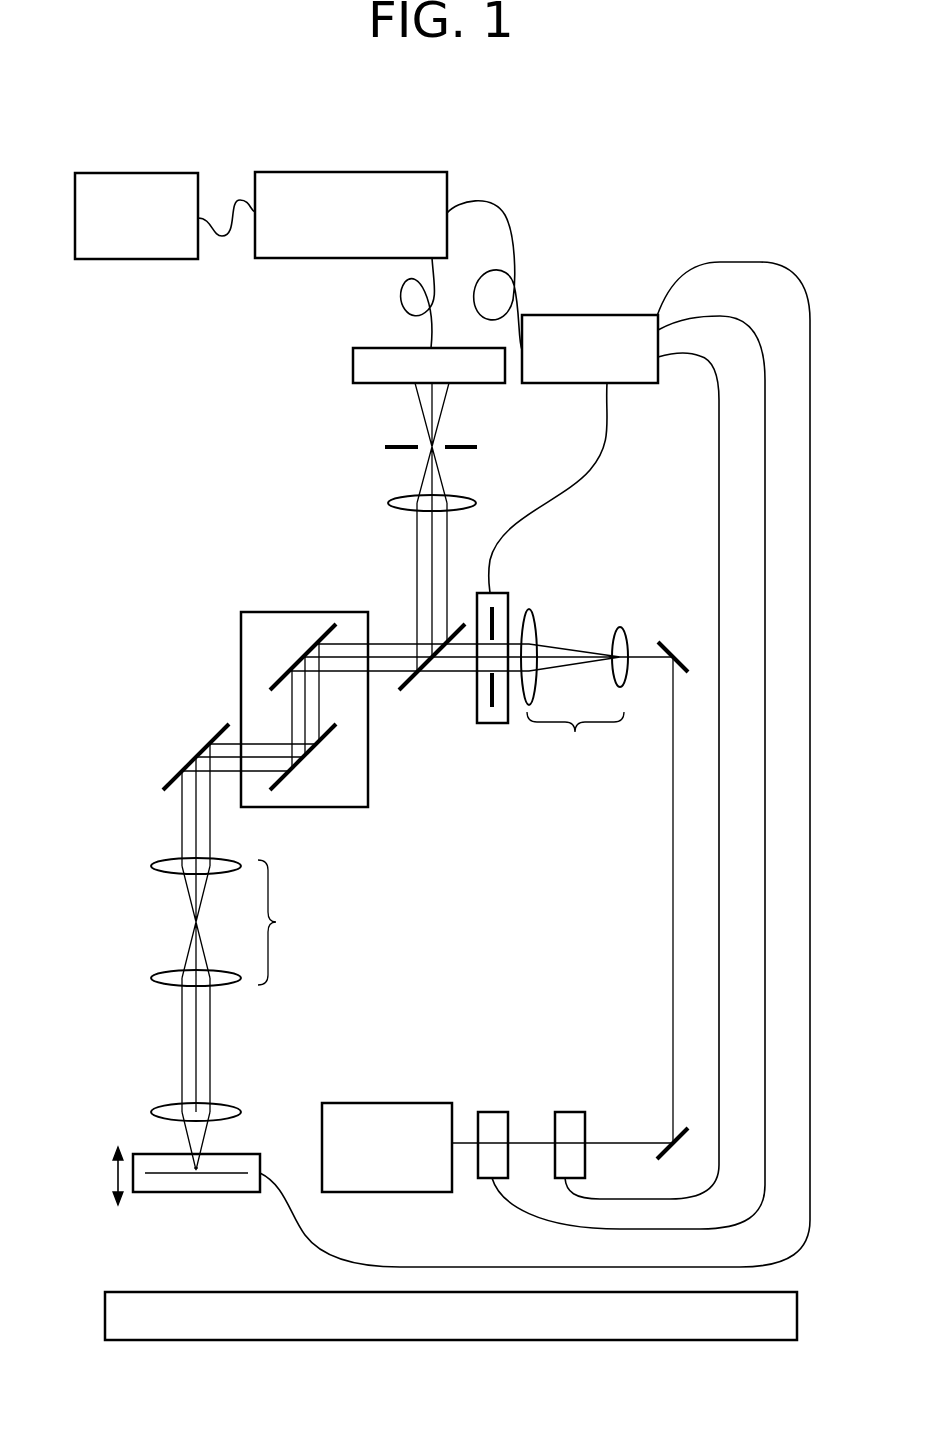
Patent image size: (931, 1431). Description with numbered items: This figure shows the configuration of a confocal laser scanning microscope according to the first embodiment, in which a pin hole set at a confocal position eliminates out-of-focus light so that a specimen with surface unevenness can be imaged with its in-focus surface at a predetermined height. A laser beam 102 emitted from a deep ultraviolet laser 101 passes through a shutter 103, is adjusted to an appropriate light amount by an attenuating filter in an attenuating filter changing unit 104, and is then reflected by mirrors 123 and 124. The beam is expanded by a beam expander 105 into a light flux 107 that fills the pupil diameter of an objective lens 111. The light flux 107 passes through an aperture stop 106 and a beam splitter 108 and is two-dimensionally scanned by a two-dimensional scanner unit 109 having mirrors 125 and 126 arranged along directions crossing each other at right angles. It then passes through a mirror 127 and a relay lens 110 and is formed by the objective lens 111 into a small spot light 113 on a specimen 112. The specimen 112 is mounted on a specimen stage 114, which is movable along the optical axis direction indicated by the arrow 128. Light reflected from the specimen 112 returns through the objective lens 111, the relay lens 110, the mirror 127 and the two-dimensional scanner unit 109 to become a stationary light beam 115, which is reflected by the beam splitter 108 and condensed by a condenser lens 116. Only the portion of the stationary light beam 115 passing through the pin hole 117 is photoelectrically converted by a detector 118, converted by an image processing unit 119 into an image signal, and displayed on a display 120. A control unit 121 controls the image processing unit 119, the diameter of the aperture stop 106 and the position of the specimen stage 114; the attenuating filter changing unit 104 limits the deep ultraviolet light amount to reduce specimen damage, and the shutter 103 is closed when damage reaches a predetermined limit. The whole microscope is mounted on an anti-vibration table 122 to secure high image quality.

The deep ultraviolet laser 101 is at (403, 1103).
The laser beam 102 is at (467, 1147).
The shutter 103 is at (493, 1112).
The attenuating filter changing unit 104 is at (570, 1112).
The beam expander 105 is at (574, 687).
The aperture stop 106 is at (492, 724).
The light flux 107 is at (512, 640).
The beam splitter 108 is at (413, 692).
The two-dimensional scanner unit 109 is at (342, 808).
The relay lens 110 is at (244, 927).
The objective lens 111 is at (228, 1103).
The specimen 112 is at (237, 1168).
The small spot light 113 is at (195, 1192).
The specimen stage 114 is at (247, 1195).
The stationary light beam 115 is at (392, 640).
The condenser lens 116 is at (388, 503).
The pin hole 117 is at (385, 447).
The detector 118 is at (353, 370).
The image processing unit 119 is at (400, 172).
The display 120 is at (166, 172).
The control unit 121 is at (550, 314).
The anti-vibration table 122 is at (140, 1291).
The mirror 123 is at (667, 1150).
The mirror 124 is at (672, 642).
The mirror 125 is at (280, 675).
The mirror 126 is at (290, 782).
The mirror 127 is at (212, 732).
The arrow 128 is at (115, 1175).